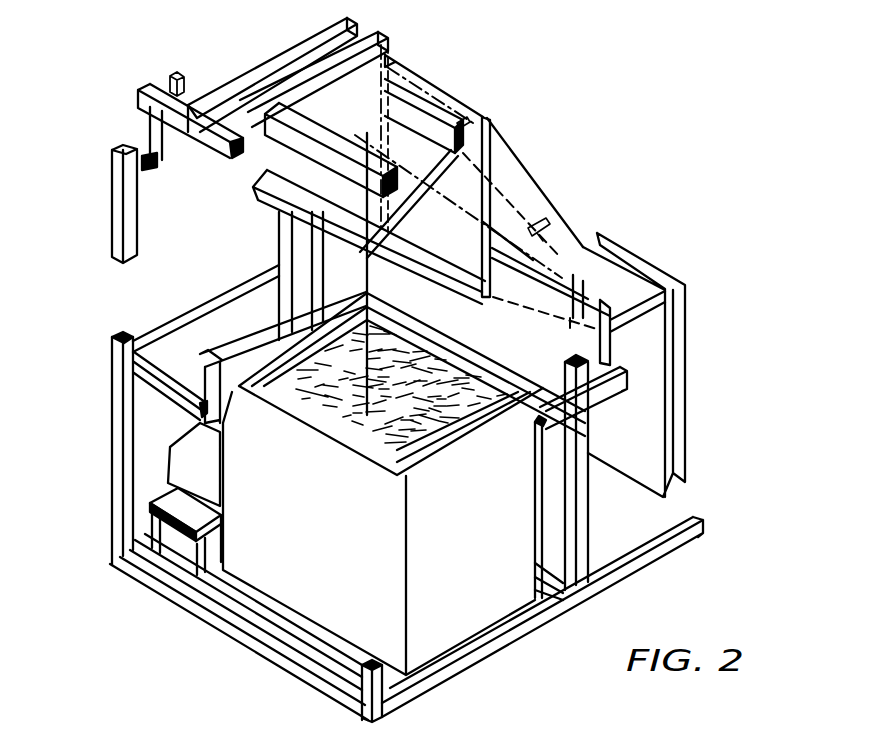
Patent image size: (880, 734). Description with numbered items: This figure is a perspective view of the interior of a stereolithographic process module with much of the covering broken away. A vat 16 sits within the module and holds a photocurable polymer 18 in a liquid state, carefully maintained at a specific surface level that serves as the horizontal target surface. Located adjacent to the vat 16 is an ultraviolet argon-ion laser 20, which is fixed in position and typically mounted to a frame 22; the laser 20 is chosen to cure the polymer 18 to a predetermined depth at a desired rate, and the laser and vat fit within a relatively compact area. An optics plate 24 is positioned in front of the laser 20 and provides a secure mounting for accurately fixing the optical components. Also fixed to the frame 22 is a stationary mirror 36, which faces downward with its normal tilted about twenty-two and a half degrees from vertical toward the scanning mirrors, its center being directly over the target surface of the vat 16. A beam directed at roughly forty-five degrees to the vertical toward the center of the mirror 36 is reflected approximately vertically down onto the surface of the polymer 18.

The vat 16 is at (508, 599).
The photocurable polymer 18 is at (441, 411).
The ultraviolet argon-ion laser 20 is at (165, 471).
The frame 22 is at (112, 350).
The optics plate 24 is at (652, 409).
The stationary mirror 36 is at (262, 175).